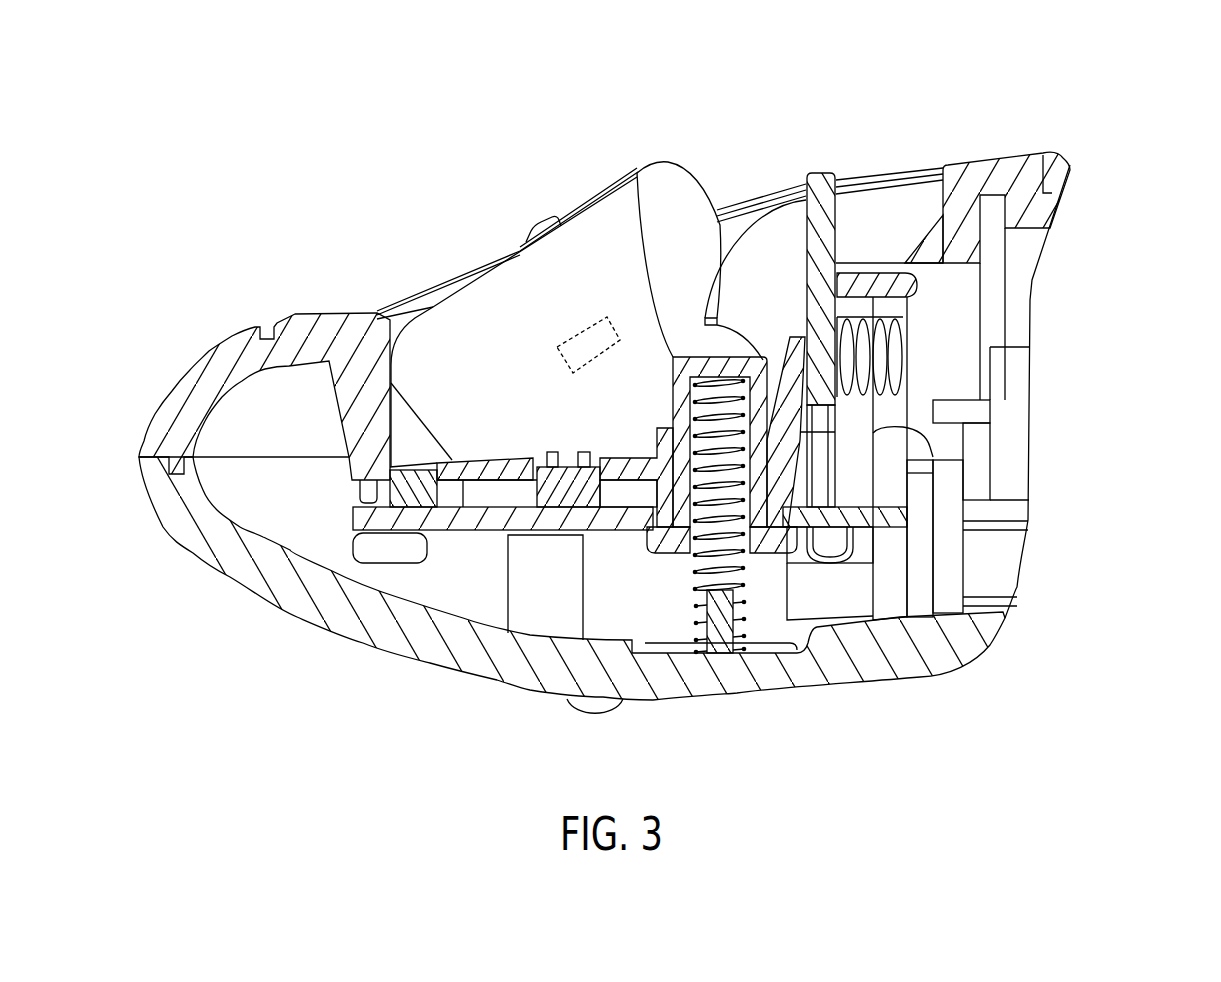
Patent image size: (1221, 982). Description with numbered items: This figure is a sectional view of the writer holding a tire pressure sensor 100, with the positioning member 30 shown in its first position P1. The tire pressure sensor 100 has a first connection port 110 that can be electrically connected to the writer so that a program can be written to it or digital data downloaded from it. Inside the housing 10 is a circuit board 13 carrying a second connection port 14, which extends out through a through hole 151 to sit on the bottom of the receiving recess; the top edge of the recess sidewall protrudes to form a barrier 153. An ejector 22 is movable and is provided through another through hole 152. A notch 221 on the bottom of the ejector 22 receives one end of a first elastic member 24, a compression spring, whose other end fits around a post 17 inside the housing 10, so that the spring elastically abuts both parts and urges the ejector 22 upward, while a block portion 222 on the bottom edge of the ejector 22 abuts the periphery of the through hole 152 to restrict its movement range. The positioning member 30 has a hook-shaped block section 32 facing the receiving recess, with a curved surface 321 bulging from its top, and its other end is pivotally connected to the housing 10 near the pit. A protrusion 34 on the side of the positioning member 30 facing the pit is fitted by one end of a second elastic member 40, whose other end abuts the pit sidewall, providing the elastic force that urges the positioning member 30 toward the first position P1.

The housing 10 is at (1073, 153).
The tire pressure sensor 100 is at (589, 193).
The first connection port 110 is at (562, 340).
The circuit board 13 is at (355, 519).
The second connection port 14 is at (565, 470).
The through hole 151 is at (535, 460).
The through hole 152 is at (665, 435).
The barrier 153 is at (397, 325).
The post 17 is at (768, 655).
The ejector 22 is at (641, 167).
The notch 221 is at (713, 373).
The block portion 222 is at (655, 538).
The first elastic member 24 is at (700, 605).
The positioning member 30 is at (838, 224).
The block section 32 is at (777, 268).
The curved surface 321 is at (745, 272).
The protrusion 34 is at (890, 360).
The second elastic member 40 is at (887, 318).
The first position P1 is at (822, 165).